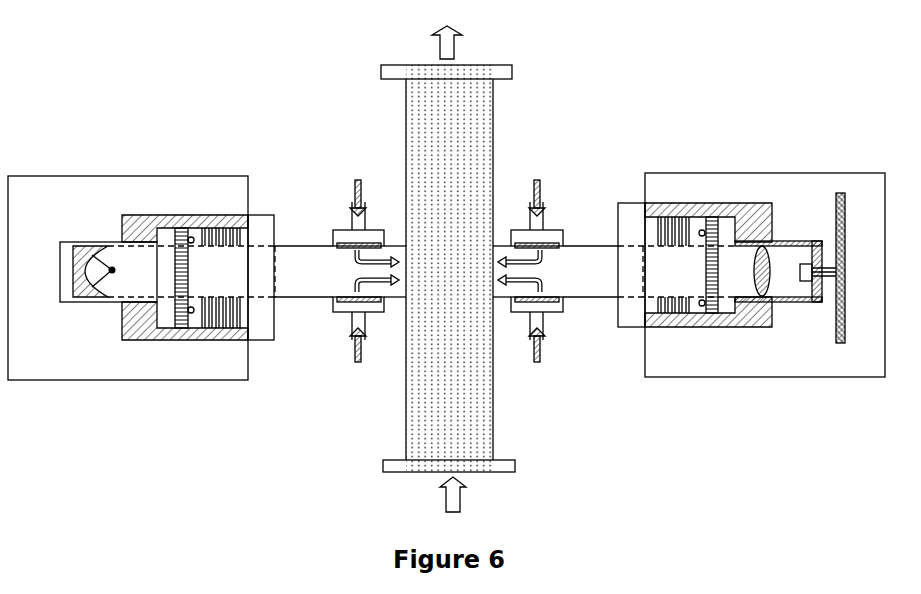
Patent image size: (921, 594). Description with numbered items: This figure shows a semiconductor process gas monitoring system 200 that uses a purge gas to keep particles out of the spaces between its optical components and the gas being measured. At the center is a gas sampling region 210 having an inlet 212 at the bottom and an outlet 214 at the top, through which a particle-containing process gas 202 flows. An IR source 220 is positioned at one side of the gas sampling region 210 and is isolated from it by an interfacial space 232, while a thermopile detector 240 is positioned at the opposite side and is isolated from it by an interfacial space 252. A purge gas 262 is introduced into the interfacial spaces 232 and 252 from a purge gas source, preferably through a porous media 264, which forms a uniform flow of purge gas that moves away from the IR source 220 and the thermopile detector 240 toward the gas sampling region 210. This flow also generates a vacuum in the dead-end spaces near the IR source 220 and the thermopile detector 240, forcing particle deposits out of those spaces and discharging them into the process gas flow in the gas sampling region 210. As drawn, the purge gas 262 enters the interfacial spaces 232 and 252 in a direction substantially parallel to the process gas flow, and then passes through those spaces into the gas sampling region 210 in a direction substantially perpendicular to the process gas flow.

The gas monitoring system 200 is at (218, 106).
The particle-containing process gas 202 is at (440, 118).
The gas sampling region 210 is at (462, 268).
The inlet 212 is at (480, 472).
The outlet 214 is at (480, 65).
The IR source 220 is at (61, 351).
The interfacial space 232 is at (340, 294).
The thermopile detector 240 is at (818, 365).
The interfacial space 252 is at (568, 271).
The purge gas 262 is at (358, 362).
The porous media 264 is at (340, 303).